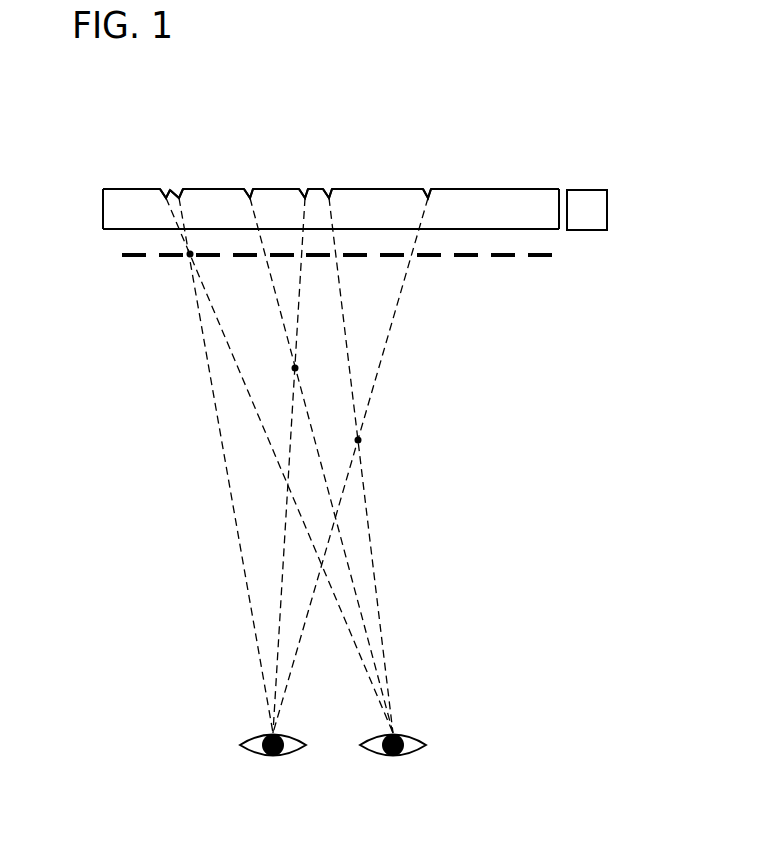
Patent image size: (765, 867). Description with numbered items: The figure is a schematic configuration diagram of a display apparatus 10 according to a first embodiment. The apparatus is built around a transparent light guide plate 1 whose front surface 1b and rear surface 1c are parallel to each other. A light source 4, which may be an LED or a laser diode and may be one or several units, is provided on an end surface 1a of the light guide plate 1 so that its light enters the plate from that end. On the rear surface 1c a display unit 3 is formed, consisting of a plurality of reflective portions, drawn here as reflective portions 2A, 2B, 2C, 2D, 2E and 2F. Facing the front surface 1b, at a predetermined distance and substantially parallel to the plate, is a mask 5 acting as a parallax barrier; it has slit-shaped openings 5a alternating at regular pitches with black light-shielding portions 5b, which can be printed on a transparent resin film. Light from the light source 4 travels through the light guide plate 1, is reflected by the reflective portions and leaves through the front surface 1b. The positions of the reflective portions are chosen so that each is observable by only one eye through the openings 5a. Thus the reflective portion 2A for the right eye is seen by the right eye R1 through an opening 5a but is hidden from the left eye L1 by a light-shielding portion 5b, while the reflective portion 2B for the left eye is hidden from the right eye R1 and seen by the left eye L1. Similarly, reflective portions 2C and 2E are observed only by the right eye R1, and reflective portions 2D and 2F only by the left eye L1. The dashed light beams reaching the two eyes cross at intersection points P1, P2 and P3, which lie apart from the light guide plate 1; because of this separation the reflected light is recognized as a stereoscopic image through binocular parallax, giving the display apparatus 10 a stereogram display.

The light guide plate 1 is at (325, 206).
The end surface 1a is at (559, 212).
The front surface 1b is at (117, 230).
The rear surface 1c is at (477, 189).
The reflective portion for the right eye 2A is at (161, 189).
The reflective portion for the left eye 2B is at (179, 194).
The reflective portion for the right eye 2C is at (251, 195).
The reflective portion for the left eye 2D is at (306, 194).
The reflective portion for the right eye 2E is at (331, 193).
The reflective portion for the left eye 2F is at (428, 195).
The display unit 3 is at (283, 396).
The light source 4 is at (607, 207).
The mask 5 is at (344, 291).
The opening 5a is at (518, 258).
The light-shielding portion 5b is at (464, 258).
The display apparatus 10 is at (347, 396).
The intersection point P1 is at (189, 257).
The intersection point P2 is at (292, 366).
The intersection point P3 is at (362, 441).
The left eye L1 is at (273, 758).
The right eye R1 is at (393, 758).